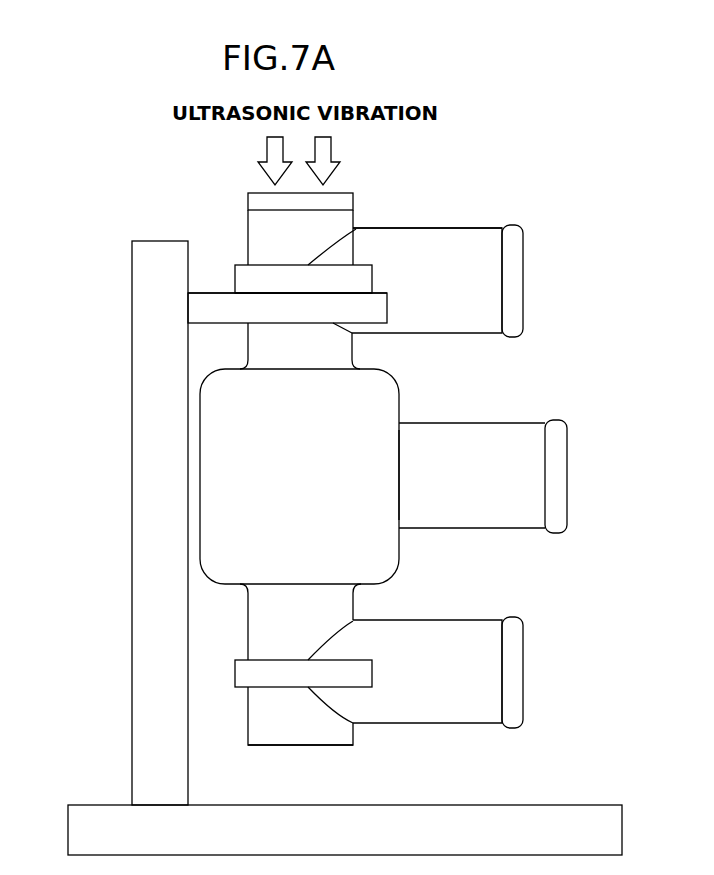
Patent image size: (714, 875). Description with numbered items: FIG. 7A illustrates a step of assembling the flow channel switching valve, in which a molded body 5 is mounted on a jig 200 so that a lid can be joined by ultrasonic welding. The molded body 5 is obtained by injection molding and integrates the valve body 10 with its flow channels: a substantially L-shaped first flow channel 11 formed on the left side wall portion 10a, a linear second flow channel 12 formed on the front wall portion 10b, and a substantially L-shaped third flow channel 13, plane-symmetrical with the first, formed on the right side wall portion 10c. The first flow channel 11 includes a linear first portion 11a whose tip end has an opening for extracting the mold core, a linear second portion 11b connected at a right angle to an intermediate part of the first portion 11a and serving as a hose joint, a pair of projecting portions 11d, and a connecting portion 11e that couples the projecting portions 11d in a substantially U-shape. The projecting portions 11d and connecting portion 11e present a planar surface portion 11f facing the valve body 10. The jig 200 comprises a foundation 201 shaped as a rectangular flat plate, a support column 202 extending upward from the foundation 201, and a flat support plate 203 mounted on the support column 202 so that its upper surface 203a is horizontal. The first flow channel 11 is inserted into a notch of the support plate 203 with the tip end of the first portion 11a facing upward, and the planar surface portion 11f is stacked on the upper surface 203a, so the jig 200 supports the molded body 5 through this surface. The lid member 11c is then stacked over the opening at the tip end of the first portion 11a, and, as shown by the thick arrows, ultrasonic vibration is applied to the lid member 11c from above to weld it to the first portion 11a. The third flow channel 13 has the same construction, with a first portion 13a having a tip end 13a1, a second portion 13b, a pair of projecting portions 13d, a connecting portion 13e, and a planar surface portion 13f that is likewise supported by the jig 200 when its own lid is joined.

The molded body 5 is at (526, 228).
The valve body 10 is at (238, 470).
The left side wall portion 10a is at (370, 364).
The front wall portion 10b is at (400, 492).
The right side wall portion 10c is at (372, 596).
The first flow channel 11 is at (495, 226).
The first portion 11a is at (356, 222).
The second portion 11b is at (448, 238).
The lid member 11c is at (244, 203).
The projecting portions 11d is at (292, 275).
The connecting portion 11e is at (237, 279).
The planar surface portion 11f is at (262, 297).
The second flow channel 12 is at (530, 528).
The third flow channel 13 is at (493, 725).
The first portion 13a is at (347, 732).
The tip end 13a1 is at (250, 746).
The second portion 13b is at (448, 722).
The projecting portions 13d is at (290, 677).
The connecting portion 13e is at (235, 677).
The planar surface portion 13f is at (258, 658).
The jig 200 is at (132, 242).
The foundation 201 is at (578, 803).
The support column 202 is at (131, 423).
The support plate 203 is at (387, 310).
The upper surface 203a is at (378, 288).